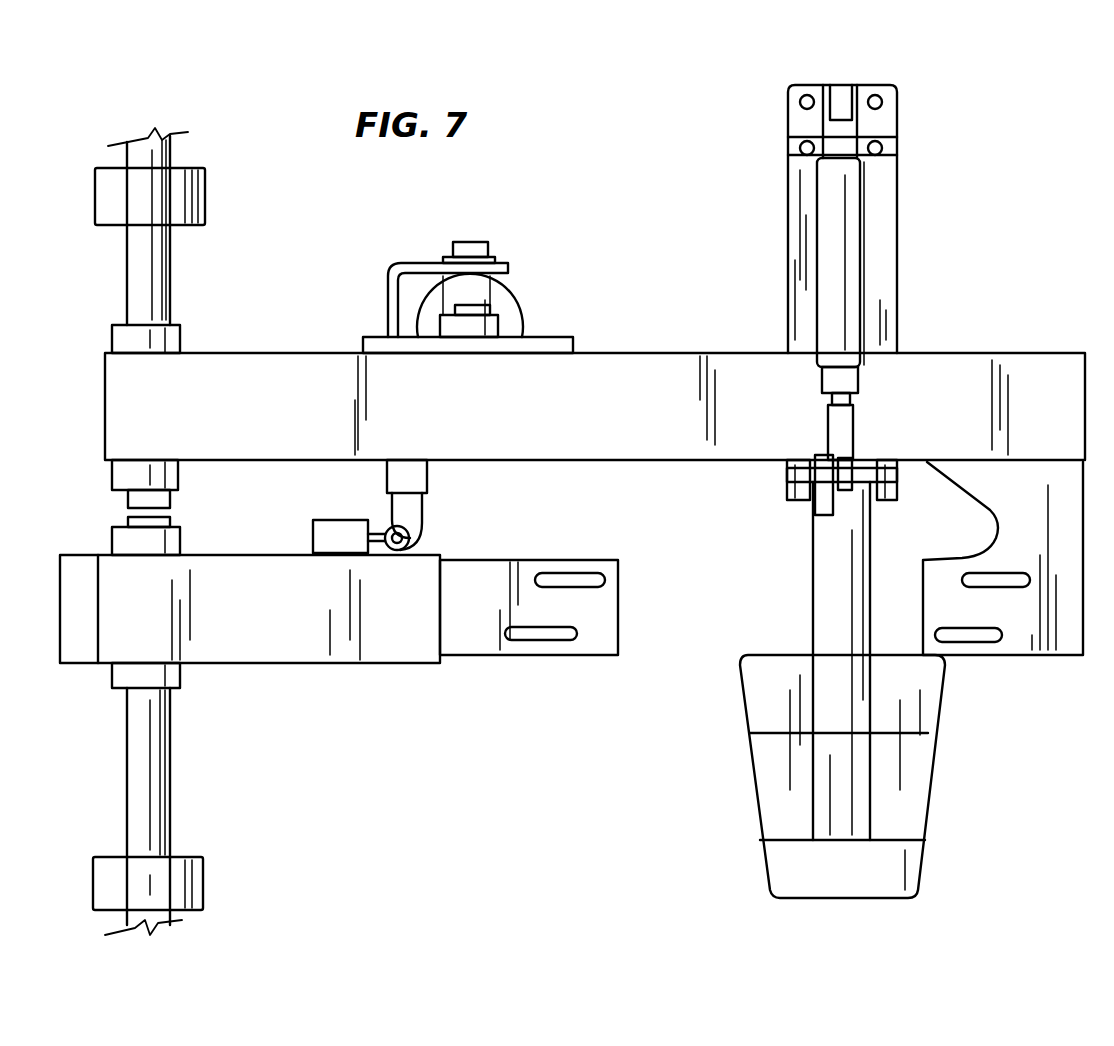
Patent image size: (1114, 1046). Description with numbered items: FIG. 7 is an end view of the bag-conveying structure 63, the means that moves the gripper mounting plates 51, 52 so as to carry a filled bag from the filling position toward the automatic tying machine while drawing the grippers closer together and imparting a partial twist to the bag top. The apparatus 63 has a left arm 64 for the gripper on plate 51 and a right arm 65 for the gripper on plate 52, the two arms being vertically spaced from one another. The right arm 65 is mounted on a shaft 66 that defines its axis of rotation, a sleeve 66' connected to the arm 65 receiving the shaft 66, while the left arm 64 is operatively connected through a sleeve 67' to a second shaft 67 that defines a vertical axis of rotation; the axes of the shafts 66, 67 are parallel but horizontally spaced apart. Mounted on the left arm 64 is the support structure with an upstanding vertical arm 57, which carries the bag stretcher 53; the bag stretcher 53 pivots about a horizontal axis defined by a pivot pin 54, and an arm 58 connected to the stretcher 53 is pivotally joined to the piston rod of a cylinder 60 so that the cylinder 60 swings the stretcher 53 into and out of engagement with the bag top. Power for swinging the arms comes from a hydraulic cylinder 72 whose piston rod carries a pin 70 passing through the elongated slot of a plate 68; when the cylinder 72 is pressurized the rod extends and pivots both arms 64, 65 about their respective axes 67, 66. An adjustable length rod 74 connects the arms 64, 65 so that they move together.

The gripper mounting plate 51 is at (945, 552).
The gripper mounting plate 52 is at (573, 657).
The bag stretcher 53 is at (752, 812).
The pivot pin 54 is at (773, 476).
The vertical arm 57 is at (888, 318).
The arm 58 is at (812, 500).
The cylinder 60 is at (855, 262).
The structure for moving the gripper mounting plates 63 is at (681, 228).
The left arm 64 is at (652, 438).
The right arm 65 is at (283, 658).
The shaft 66 is at (156, 811).
The sleeve 66' is at (121, 687).
The second shaft 67 is at (157, 226).
The sleeve 67' is at (176, 332).
The plate 68 is at (575, 340).
The pin 70 is at (490, 308).
The hydraulic cylinder 72 is at (512, 318).
The adjustable length rod 74 is at (378, 524).